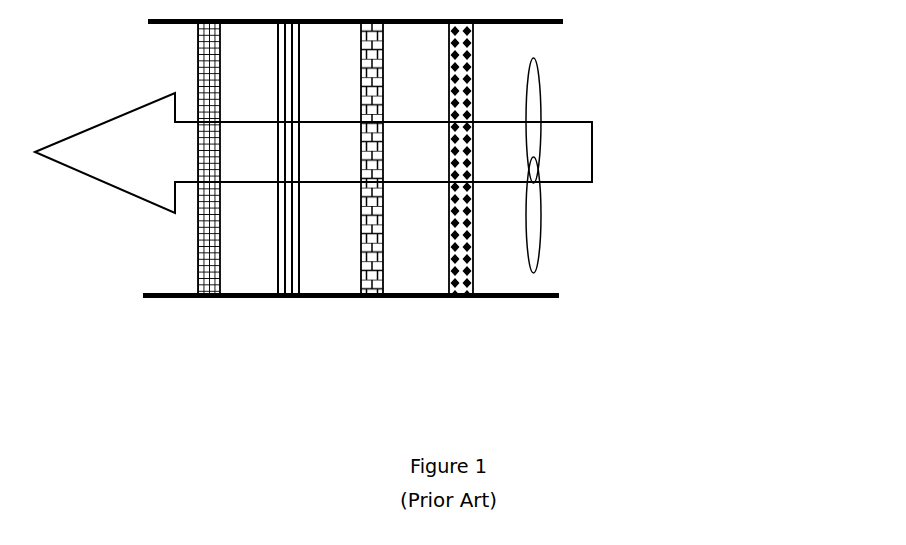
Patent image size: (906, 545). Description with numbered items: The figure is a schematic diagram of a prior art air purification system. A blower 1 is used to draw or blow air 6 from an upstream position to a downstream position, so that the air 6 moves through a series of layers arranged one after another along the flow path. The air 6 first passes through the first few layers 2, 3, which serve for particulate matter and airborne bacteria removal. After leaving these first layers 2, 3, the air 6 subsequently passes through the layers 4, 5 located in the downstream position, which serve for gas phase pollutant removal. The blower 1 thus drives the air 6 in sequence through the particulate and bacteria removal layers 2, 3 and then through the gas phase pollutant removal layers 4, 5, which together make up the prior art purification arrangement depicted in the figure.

The blower 1 is at (535, 275).
The first layer 2 is at (211, 297).
The first layer 3 is at (293, 297).
The downstream layer 4 is at (377, 297).
The downstream layer 5 is at (453, 297).
The air 6 is at (576, 150).